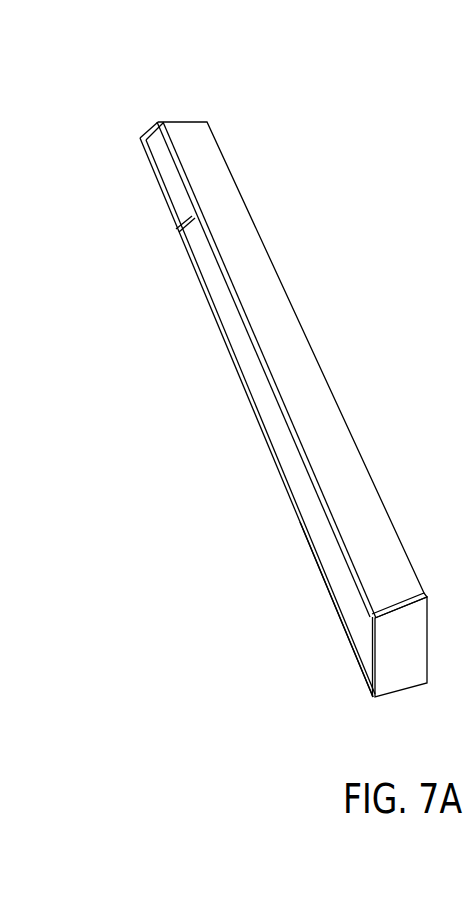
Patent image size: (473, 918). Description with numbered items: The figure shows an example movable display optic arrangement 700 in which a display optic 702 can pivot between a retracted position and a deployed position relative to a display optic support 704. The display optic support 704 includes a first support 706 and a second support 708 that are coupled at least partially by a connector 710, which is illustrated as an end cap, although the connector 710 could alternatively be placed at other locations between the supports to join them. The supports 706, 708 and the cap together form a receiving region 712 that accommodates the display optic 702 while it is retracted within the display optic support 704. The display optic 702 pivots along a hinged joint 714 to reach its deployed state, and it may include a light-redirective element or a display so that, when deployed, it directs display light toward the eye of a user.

The bar assembly 700 is at (147, 45).
The display optic 702 is at (160, 182).
The display optic support 704 is at (238, 157).
The first support 706 is at (393, 577).
The second support 708 is at (360, 653).
The connector 710 is at (422, 644).
The receiving region 712 is at (200, 266).
The hinged joint 714 is at (146, 125).